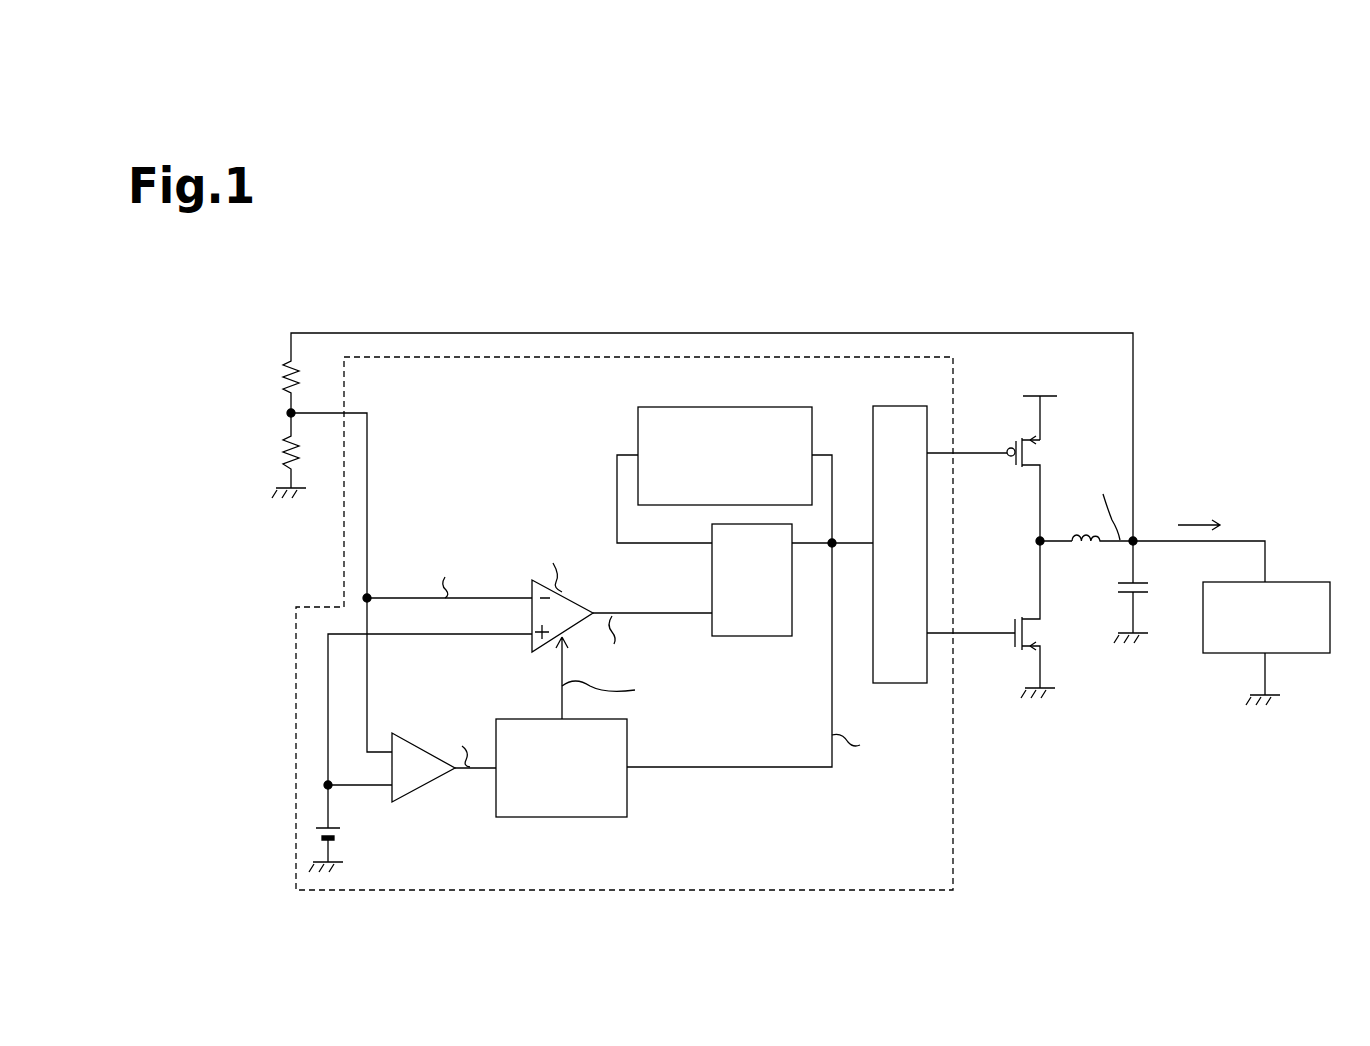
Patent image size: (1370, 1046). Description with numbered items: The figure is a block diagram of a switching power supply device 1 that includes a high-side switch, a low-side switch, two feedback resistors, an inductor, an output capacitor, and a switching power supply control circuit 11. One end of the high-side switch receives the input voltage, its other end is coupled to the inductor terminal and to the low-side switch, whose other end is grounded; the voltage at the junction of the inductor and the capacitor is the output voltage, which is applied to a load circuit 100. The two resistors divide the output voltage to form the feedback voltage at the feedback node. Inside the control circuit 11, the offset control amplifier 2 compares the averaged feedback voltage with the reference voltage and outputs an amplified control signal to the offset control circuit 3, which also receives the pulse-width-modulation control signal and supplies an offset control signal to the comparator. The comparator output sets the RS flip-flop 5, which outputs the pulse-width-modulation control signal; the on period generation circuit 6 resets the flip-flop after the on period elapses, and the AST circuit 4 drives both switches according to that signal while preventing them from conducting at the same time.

The switching power supply device 1 is at (1185, 327).
The offset control amplifier 2 is at (430, 790).
The offset control circuit 3 is at (588, 817).
The anti-shoot-through (AST) circuit 4 is at (890, 406).
The RS flip-flop 5 is at (770, 636).
The on period generation circuit 6 is at (750, 407).
The switching power supply control circuit 11 is at (953, 850).
The load circuit 100 is at (1305, 581).